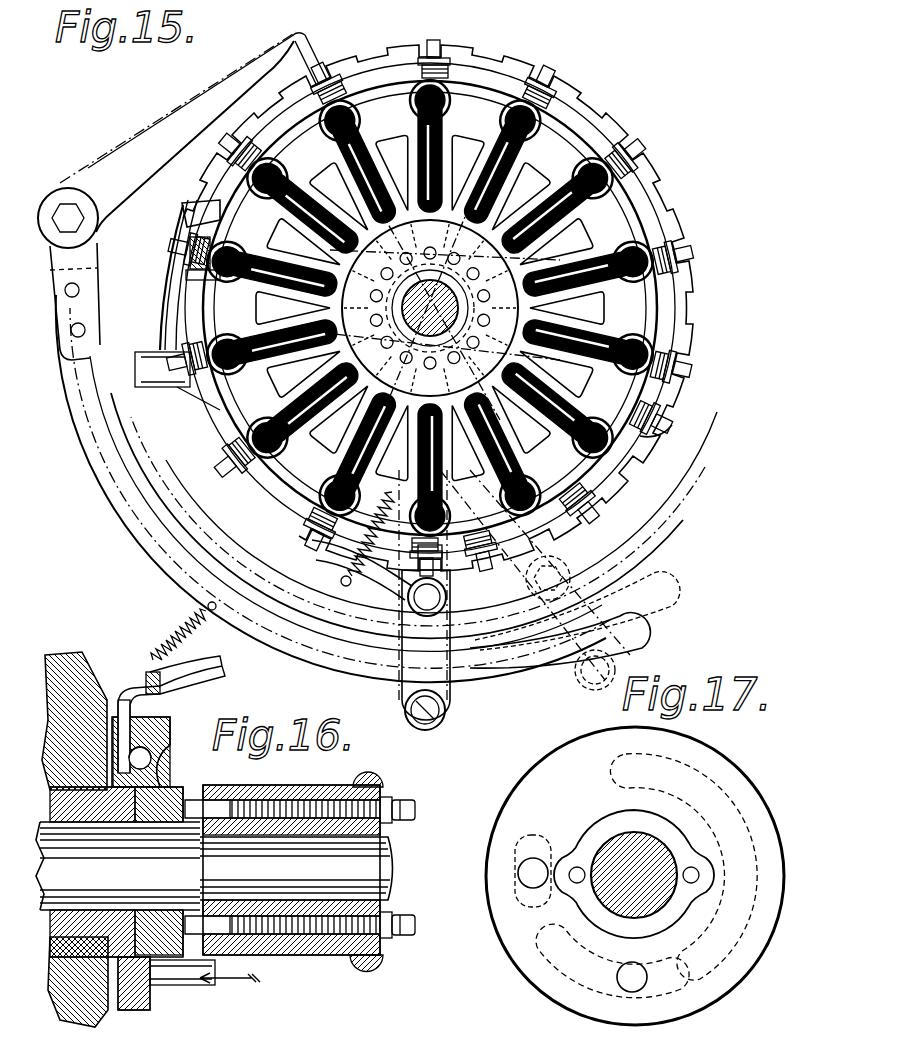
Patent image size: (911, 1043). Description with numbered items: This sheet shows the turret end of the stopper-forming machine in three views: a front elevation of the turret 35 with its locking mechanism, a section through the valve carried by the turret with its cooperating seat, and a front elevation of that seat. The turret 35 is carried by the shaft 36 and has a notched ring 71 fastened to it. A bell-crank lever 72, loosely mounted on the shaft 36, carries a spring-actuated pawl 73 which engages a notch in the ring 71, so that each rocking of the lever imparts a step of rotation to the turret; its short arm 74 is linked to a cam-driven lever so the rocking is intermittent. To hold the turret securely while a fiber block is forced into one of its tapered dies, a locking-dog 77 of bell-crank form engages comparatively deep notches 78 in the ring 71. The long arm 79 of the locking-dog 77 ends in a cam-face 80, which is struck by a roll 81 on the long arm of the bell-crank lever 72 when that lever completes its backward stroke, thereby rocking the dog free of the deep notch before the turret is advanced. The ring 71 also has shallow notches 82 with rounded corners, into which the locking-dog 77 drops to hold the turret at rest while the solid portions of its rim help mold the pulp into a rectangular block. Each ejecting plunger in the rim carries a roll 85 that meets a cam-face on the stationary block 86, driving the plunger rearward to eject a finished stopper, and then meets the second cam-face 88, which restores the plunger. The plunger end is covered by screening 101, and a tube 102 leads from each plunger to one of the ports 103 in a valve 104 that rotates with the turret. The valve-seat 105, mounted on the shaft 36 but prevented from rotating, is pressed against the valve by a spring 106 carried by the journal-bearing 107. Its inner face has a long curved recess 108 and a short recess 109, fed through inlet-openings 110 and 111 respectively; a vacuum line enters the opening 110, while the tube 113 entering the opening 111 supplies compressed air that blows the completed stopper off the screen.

In FIG. 15, the turret 35 is at (395, 90).
In FIG. 15, the shaft 36 is at (436, 304).
In FIG. 16, the shaft 36 is at (406, 862).
In FIG. 17, the shaft 36 is at (622, 845).
In FIG. 15, the notched ring 71 is at (664, 438).
In FIG. 15, the bell-crank lever 72 is at (517, 595).
In FIG. 15, the spring-actuated pawl 73 is at (322, 566).
In FIG. 15, the short arm 74 is at (318, 255).
In FIG. 15, the locking-dog 77 is at (140, 158).
In FIG. 15, the deep notches 78 is at (440, 44).
In FIG. 15, the long arm 79 is at (148, 470).
In FIG. 15, the cam-face 80 is at (562, 662).
In FIG. 15, the roll 81 is at (556, 692).
In FIG. 15, the shallow notches 82 is at (582, 104).
In FIG. 15, the roll 85 is at (192, 258).
In FIG. 15, the stationary block 86 is at (190, 307).
In FIG. 15, the second cam-face 88 is at (207, 223).
In FIG. 15, the screening 101 is at (366, 192).
In FIG. 15, the tube 102 is at (590, 278).
In FIG. 16, the tube 102 is at (215, 683).
In FIG. 15, the ports 103 is at (520, 362).
In FIG. 16, the ports 103 is at (145, 758).
In FIG. 16, the valve 104 is at (74, 721).
In FIG. 16, the valve-seat 105 is at (205, 784).
In FIG. 17, the valve-seat 105 is at (612, 876).
In FIG. 16, the spring 106 is at (258, 935).
In FIG. 16, the journal-bearing 107 is at (375, 782).
In FIG. 16, the long curved recess 108 is at (150, 760).
In FIG. 17, the long curved recess 108 is at (712, 812).
In FIG. 16, the short recess 109 is at (160, 988).
In FIG. 17, the short recess 109 is at (530, 892).
In FIG. 17, the inlet-opening 110 is at (630, 990).
In FIG. 17, the inlet-opening 111 is at (530, 874).
In FIG. 16, the tube 113 is at (212, 982).